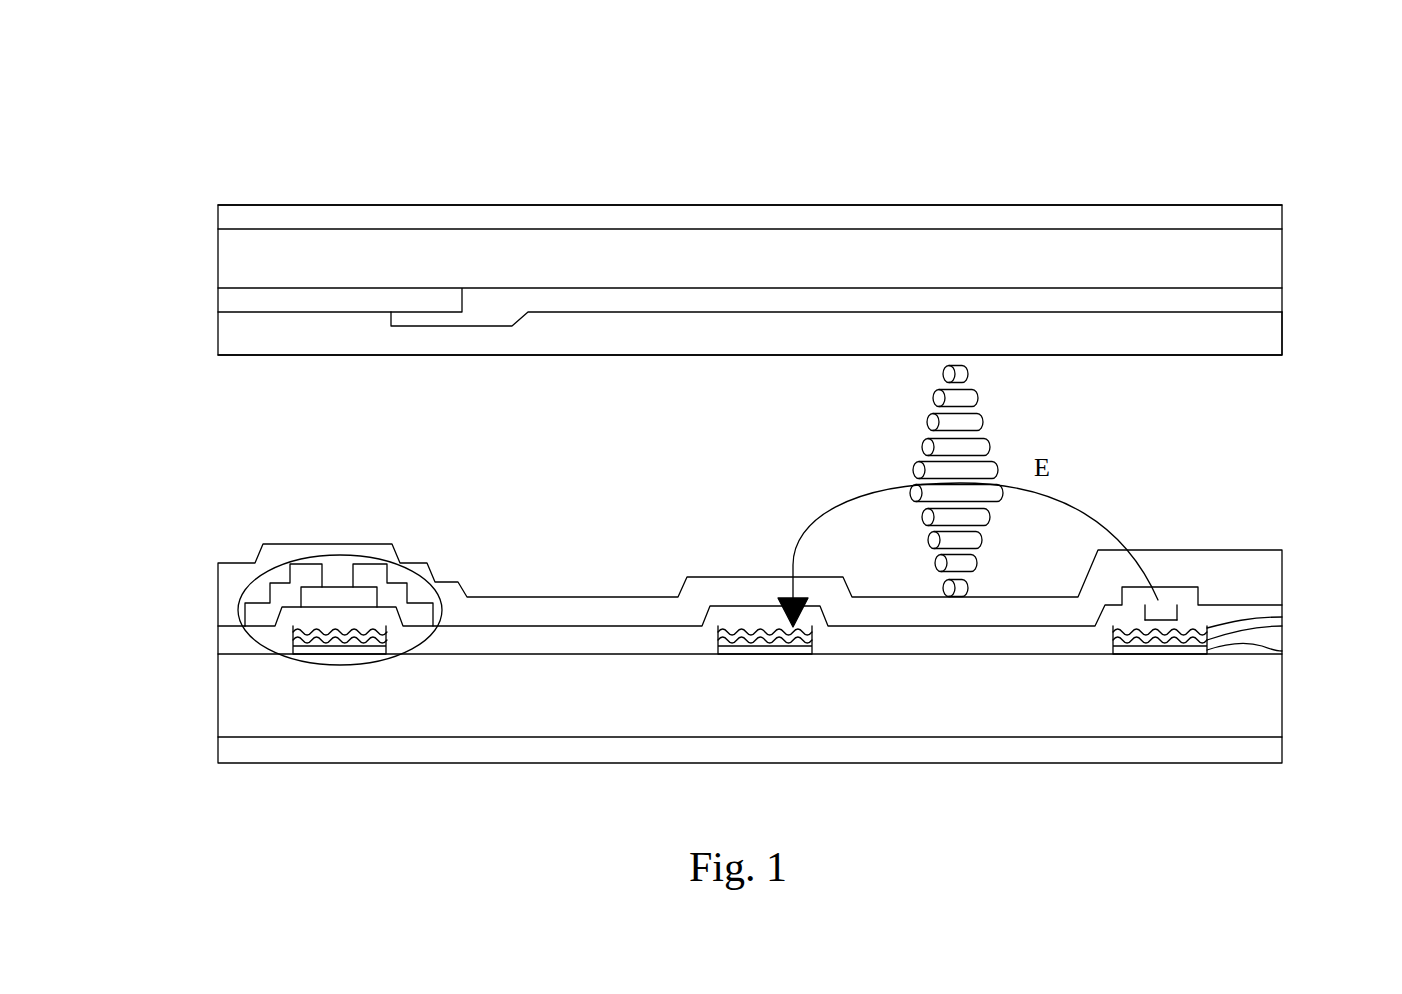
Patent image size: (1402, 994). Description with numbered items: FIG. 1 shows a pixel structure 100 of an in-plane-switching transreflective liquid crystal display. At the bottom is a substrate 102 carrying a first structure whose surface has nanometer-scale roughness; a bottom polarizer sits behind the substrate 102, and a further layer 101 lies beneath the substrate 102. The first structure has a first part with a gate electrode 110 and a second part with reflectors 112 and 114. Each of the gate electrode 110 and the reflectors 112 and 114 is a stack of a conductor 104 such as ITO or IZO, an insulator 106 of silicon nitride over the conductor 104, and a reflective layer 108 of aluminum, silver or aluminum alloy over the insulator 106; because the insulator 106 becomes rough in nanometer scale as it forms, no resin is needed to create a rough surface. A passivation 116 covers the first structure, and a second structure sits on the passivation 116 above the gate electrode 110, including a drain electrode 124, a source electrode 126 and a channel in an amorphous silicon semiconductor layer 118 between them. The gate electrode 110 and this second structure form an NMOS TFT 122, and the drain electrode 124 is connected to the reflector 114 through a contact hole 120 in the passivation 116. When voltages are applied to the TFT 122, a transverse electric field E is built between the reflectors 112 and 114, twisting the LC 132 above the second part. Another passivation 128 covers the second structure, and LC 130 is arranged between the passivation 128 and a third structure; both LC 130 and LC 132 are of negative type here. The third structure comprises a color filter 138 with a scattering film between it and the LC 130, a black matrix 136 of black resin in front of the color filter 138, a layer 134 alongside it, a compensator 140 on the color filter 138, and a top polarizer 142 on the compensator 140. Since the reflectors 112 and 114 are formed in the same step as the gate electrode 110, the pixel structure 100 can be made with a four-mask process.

The pixel structure 100 is at (1212, 133).
The substrate 101 is at (218, 752).
The substrate 102 is at (218, 696).
The conductor 104 is at (1282, 651).
The insulator 106 is at (1282, 626).
The reflective layer 108 is at (1282, 617).
The gate electrode 110 is at (283, 642).
The reflector 112 is at (753, 615).
The reflector 114 is at (1162, 617).
The passivation 116 is at (218, 632).
The amorphous silicon semiconductor layer 118 is at (338, 587).
The contact hole 120 is at (1182, 613).
The TFT 122 is at (338, 663).
The drain electrode 124 is at (397, 580).
The source electrode 126 is at (303, 562).
The passivation 128 is at (218, 590).
The LC 130 is at (213, 393).
The LC 132 is at (928, 393).
The black matrix 134 is at (218, 328).
The black matrix 136 is at (218, 302).
The color filter 138 is at (1282, 293).
The compensator 140 is at (218, 250).
The top polarizer 142 is at (218, 213).